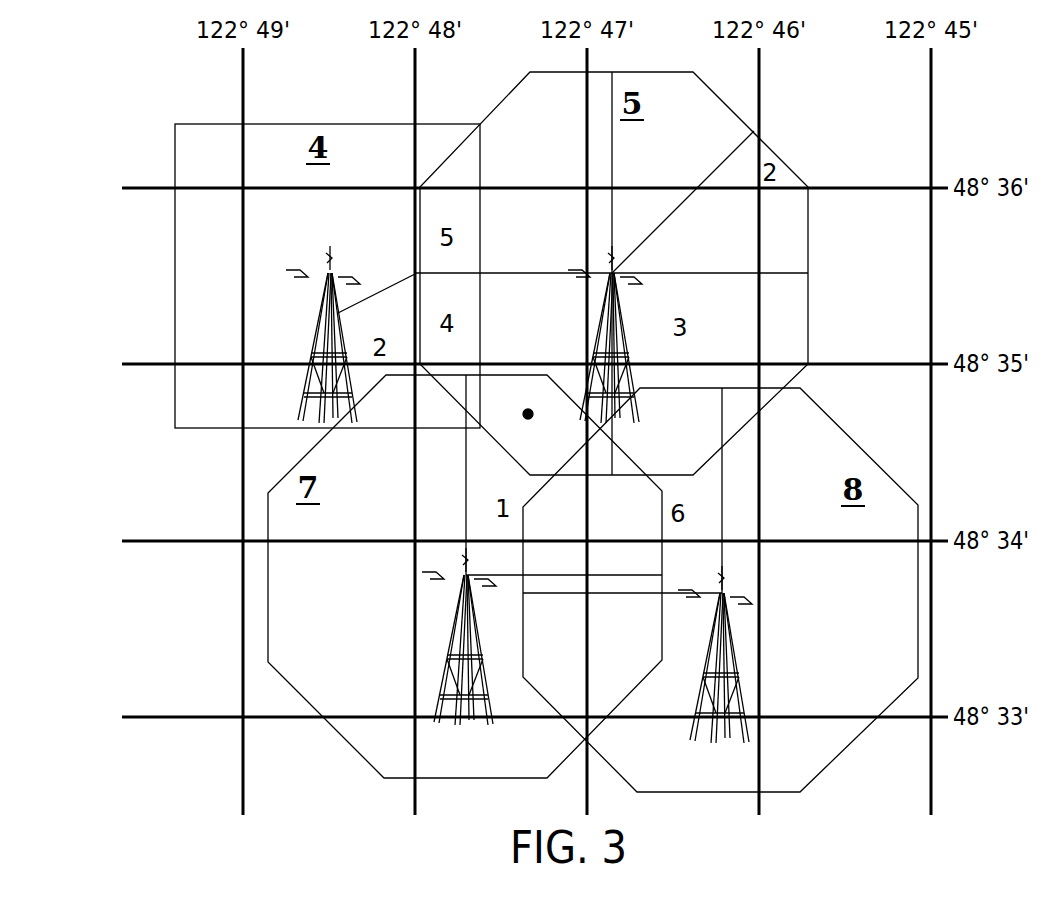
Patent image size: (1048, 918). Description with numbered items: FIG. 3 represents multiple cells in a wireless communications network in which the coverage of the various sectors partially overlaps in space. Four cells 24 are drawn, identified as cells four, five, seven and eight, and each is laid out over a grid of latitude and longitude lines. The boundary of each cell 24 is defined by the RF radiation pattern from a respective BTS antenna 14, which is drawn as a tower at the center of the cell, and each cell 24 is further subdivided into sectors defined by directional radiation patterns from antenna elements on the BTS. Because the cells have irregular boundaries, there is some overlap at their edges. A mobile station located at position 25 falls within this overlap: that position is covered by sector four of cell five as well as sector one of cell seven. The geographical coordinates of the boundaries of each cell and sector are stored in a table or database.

The BTS antenna 14 is at (448, 647).
The cell 24 is at (808, 243).
The position 25 is at (528, 420).